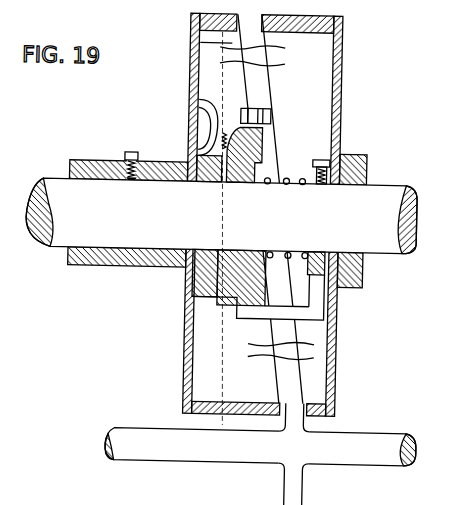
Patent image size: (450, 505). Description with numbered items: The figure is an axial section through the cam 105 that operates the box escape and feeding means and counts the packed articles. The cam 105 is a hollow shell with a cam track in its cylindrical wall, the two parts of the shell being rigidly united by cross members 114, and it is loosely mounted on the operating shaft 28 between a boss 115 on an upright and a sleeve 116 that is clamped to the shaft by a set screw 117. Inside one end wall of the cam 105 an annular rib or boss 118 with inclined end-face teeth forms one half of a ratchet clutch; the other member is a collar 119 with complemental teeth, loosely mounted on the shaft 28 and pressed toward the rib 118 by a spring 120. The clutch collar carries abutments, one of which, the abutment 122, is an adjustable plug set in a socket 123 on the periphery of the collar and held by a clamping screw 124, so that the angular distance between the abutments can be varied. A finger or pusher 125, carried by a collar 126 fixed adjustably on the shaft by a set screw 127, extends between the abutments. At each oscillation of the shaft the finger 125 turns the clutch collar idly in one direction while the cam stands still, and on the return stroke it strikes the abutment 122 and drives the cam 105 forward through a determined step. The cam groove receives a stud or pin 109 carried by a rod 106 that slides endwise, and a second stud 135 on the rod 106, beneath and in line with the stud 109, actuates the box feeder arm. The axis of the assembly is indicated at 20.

The axis 20 is at (222, 32).
The operating shaft 28 is at (222, 216).
The cam 105 is at (341, 345).
The rod 106 is at (127, 437).
The stud or pin 109 is at (290, 412).
The cross members 114 is at (249, 65).
The boss 115 is at (360, 154).
The sleeve 116 is at (91, 164).
The set screw 117 is at (136, 154).
The annular rib or boss 118 is at (200, 105).
The collar 119 is at (270, 141).
The spring 120 is at (282, 181).
The abutment 122 is at (266, 111).
The socket 123 is at (241, 111).
The clamping screw 124 is at (204, 148).
The finger or pusher 125 is at (271, 361).
The collar 126 is at (319, 283).
The set screw 127 is at (325, 145).
The stud 135 is at (300, 491).